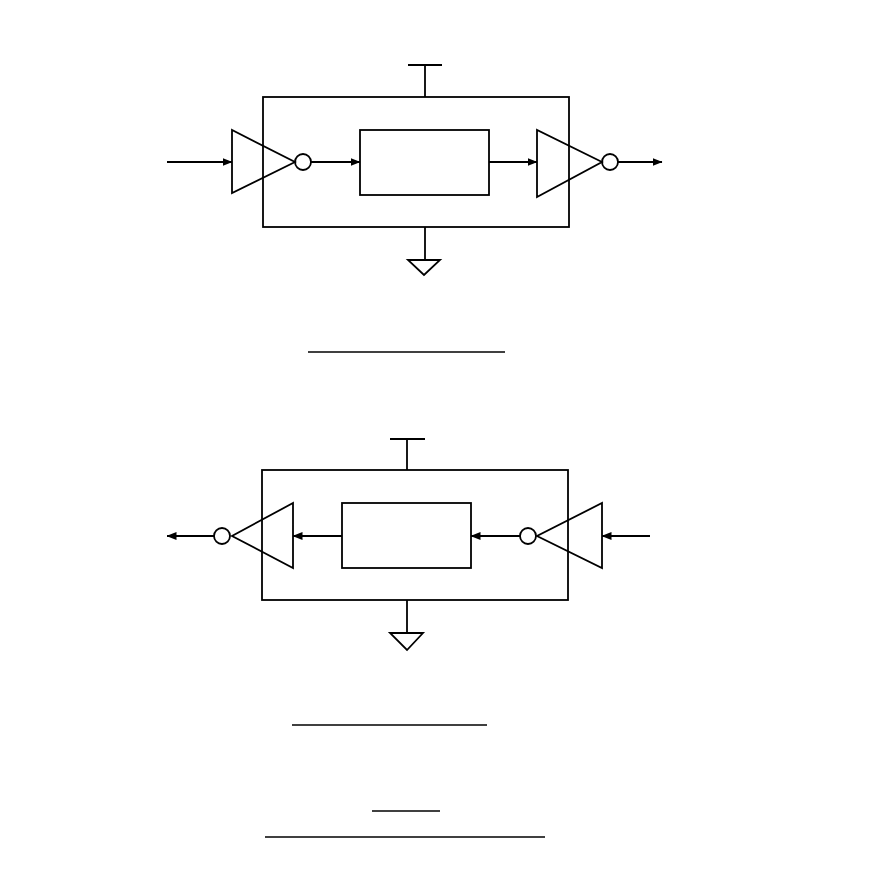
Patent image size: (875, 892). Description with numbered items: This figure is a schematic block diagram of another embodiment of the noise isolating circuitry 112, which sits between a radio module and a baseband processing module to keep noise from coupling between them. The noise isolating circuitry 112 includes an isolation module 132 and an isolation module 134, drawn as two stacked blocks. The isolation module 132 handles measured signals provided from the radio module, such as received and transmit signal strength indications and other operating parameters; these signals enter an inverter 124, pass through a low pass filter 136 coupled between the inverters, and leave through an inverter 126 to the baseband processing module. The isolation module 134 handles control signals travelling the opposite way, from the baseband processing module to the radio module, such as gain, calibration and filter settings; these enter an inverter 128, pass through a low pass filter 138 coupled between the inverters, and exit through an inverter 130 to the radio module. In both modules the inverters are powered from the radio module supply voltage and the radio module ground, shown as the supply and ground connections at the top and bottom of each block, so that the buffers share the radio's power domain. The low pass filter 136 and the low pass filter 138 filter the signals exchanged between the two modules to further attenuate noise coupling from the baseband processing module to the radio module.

The noise isolating circuitry 112 is at (458, 437).
The inverter 124 is at (288, 146).
The inverter 126 is at (599, 168).
The inverter 128 is at (546, 522).
The inverter 130 is at (230, 540).
The isolation module 132 is at (456, 195).
The isolation module 134 is at (463, 568).
The low pass filter 136 is at (448, 162).
The low pass filter 138 is at (382, 535).